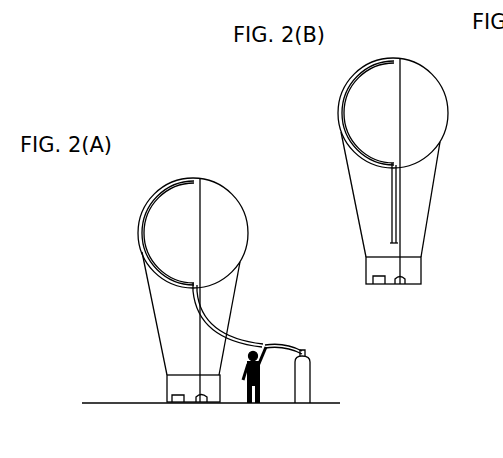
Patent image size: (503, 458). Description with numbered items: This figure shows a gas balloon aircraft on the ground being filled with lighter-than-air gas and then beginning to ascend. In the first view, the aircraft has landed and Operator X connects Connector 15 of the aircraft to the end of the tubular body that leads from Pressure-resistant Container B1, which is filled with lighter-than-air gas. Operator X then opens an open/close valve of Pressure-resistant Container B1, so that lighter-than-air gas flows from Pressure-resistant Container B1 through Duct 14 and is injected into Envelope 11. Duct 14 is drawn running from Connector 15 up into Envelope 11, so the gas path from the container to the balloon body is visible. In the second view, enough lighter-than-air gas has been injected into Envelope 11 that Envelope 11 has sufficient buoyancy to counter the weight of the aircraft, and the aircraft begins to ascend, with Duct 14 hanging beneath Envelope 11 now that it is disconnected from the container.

The envelope 11 is at (245, 222).
The duct 14 is at (247, 340).
The connector 15 is at (266, 343).
The operator X is at (258, 388).
The pressure-resistant container B1 is at (311, 370).